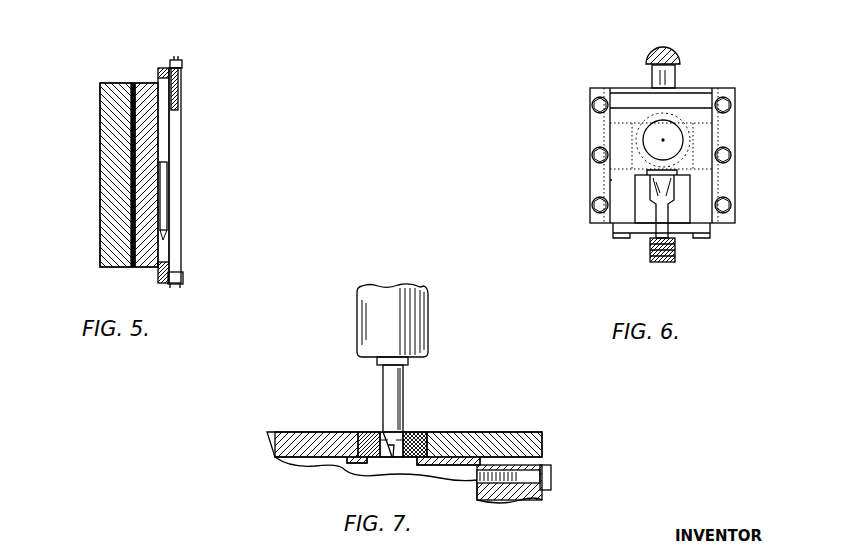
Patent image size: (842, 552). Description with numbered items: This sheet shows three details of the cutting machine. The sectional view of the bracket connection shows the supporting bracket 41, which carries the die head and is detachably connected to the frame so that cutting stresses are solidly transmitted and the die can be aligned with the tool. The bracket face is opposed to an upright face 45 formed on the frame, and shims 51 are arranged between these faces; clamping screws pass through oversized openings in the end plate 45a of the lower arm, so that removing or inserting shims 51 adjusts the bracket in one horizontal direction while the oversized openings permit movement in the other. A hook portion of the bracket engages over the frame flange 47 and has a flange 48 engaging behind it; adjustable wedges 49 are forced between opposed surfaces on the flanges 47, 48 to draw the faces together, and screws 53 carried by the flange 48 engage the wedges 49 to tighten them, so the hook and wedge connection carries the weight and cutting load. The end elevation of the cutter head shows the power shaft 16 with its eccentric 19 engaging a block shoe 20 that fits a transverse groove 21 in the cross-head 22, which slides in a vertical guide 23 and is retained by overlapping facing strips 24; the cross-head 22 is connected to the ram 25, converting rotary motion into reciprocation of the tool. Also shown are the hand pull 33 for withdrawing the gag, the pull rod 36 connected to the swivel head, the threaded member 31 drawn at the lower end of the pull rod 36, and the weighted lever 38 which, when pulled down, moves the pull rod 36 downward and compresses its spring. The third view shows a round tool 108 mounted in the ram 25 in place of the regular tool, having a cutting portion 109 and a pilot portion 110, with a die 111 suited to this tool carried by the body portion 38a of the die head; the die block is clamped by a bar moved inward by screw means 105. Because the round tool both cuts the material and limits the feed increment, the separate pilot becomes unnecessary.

In FIG. 6, the power shaft 16 is at (690, 130).
In FIG. 6, the eccentric 19 is at (642, 143).
In FIG. 6, the block shoe 20 is at (645, 152).
In FIG. 6, the transverse groove 21 is at (612, 172).
In FIG. 6, the cross-head 22 is at (712, 121).
In FIG. 6, the vertical guide 23 is at (703, 101).
In FIG. 6, the facing strips 24 is at (598, 185).
In FIG. 7, the ram 25 is at (420, 308).
In FIG. 6, the threaded stud 31 is at (677, 250).
In FIG. 6, the hand pull 33 is at (656, 232).
In FIG. 6, the pull rod 36 is at (652, 86).
In FIG. 6, the weighted lever 38 is at (680, 57).
In FIG. 7, the body portion 38a is at (292, 447).
In FIG. 5, the supporting bracket 41 is at (100, 183).
In FIG. 5, the upright face 45 is at (131, 151).
In FIG. 5, the end plate 45a is at (118, 97).
In FIG. 5, the frame flange 47 is at (146, 93).
In FIG. 5, the flange 48 is at (176, 135).
In FIG. 5, the wedge 49 is at (162, 222).
In FIG. 5, the shims 51 is at (131, 267).
In FIG. 5, the screws 53 is at (174, 60).
In FIG. 7, the screw means 105 is at (552, 478).
In FIG. 7, the round tool 108 is at (403, 378).
In FIG. 7, the cutting portion 109 is at (408, 432).
In FIG. 7, the pilot portion 110 is at (415, 432).
In FIG. 7, the die 111 is at (366, 432).